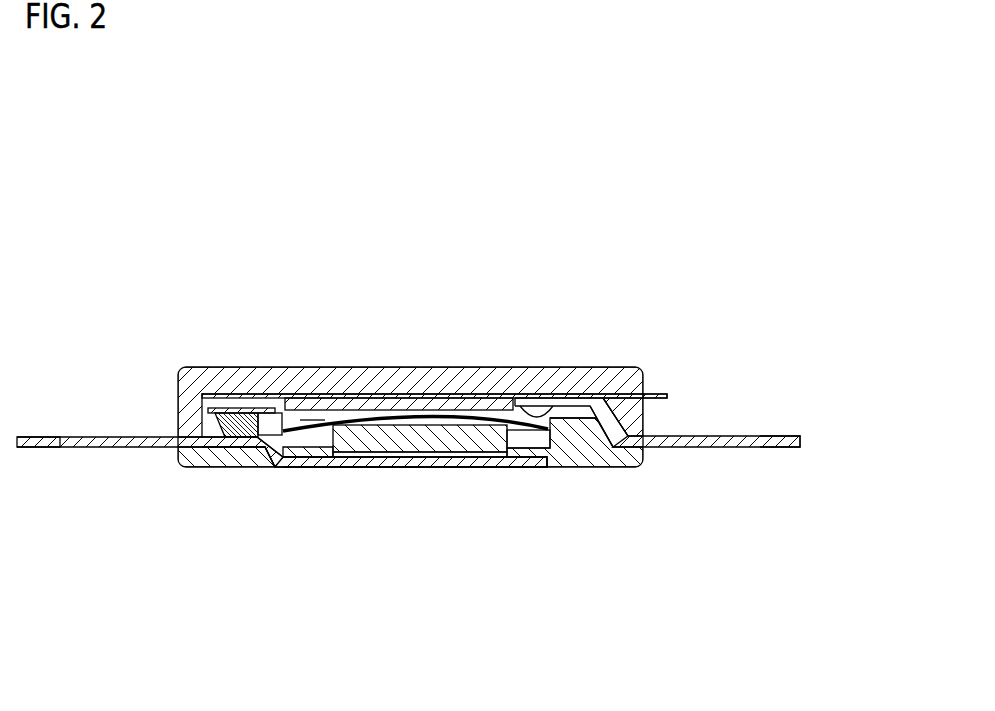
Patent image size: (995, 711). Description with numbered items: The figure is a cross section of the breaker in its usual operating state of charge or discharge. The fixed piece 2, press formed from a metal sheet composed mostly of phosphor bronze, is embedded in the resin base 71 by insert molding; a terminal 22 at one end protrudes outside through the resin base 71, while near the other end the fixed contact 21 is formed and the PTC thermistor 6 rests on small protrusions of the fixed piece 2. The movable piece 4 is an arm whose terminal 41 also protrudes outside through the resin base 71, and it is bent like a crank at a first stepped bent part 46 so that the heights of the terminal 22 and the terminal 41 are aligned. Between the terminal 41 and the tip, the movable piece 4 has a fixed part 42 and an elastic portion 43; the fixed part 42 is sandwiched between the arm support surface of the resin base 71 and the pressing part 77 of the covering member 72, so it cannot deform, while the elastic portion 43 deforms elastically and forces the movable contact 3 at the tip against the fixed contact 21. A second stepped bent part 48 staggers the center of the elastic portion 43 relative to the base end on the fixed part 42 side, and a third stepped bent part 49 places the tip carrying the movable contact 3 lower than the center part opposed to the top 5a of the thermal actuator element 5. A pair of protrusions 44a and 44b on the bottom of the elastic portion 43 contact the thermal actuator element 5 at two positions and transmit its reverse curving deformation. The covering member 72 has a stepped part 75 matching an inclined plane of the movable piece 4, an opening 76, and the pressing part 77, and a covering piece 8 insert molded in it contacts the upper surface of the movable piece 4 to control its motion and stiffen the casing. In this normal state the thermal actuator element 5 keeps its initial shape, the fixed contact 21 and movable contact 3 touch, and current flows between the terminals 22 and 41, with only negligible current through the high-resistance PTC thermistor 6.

The fixed piece 2 is at (145, 436).
The terminal 22 is at (70, 447).
The fixed contact 21 is at (236, 448).
The movable contact 3 is at (232, 403).
The movable piece 4 is at (745, 436).
The terminal 41 is at (753, 448).
The fixed part 42 is at (596, 408).
The elastic portion 43 is at (350, 394).
The protrusion 44a is at (546, 430).
The protrusion 44b is at (270, 408).
The first stepped bent part 46 is at (641, 384).
The second stepped bent part 48 is at (530, 406).
The third stepped bent part 49 is at (318, 405).
The thermal actuator element 5 is at (483, 455).
The top 5a is at (417, 416).
The PTC thermistor 6 is at (420, 455).
The resin base 71 is at (585, 447).
The covering member 72 is at (372, 377).
The stepped part 75 is at (640, 422).
The opening 76 is at (289, 412).
The pressing part 77 is at (563, 398).
The covering piece 8 is at (395, 402).